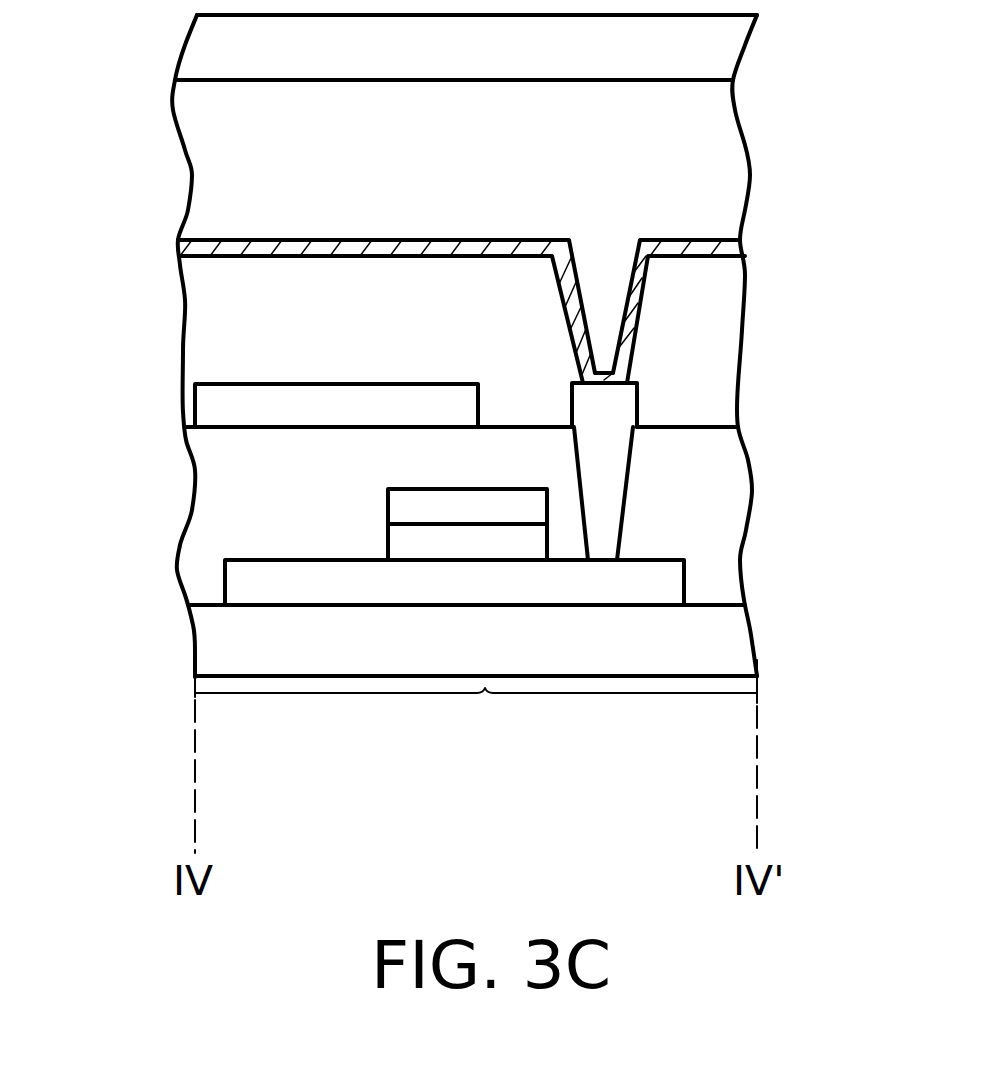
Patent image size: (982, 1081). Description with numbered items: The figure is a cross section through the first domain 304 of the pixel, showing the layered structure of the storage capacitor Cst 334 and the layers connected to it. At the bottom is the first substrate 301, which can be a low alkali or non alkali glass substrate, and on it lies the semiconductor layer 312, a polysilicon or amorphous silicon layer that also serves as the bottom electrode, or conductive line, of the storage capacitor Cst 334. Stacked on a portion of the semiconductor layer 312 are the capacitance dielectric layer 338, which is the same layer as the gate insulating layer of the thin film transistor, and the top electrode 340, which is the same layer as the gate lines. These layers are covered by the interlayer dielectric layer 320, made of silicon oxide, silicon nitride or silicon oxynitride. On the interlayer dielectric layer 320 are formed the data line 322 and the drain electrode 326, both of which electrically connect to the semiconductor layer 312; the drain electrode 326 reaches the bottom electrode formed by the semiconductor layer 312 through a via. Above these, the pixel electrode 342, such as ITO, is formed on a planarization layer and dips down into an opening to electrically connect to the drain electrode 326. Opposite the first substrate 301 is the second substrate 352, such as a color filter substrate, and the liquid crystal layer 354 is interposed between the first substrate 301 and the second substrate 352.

The second substrate 352 is at (728, 47).
The liquid crystal layer 354 is at (728, 157).
The pixel electrode 342 is at (728, 247).
The drain electrode 326 is at (628, 417).
The interlayer dielectric layer 320 is at (727, 457).
The data line 322 is at (380, 410).
The top electrode 340 is at (537, 507).
The capacitance dielectric layer 338 is at (533, 543).
The semiconductor layer 312 is at (663, 590).
The first substrate 301 is at (723, 652).
The storage capacitor Cst 334 is at (860, 482).
The first domain 304 is at (476, 700).